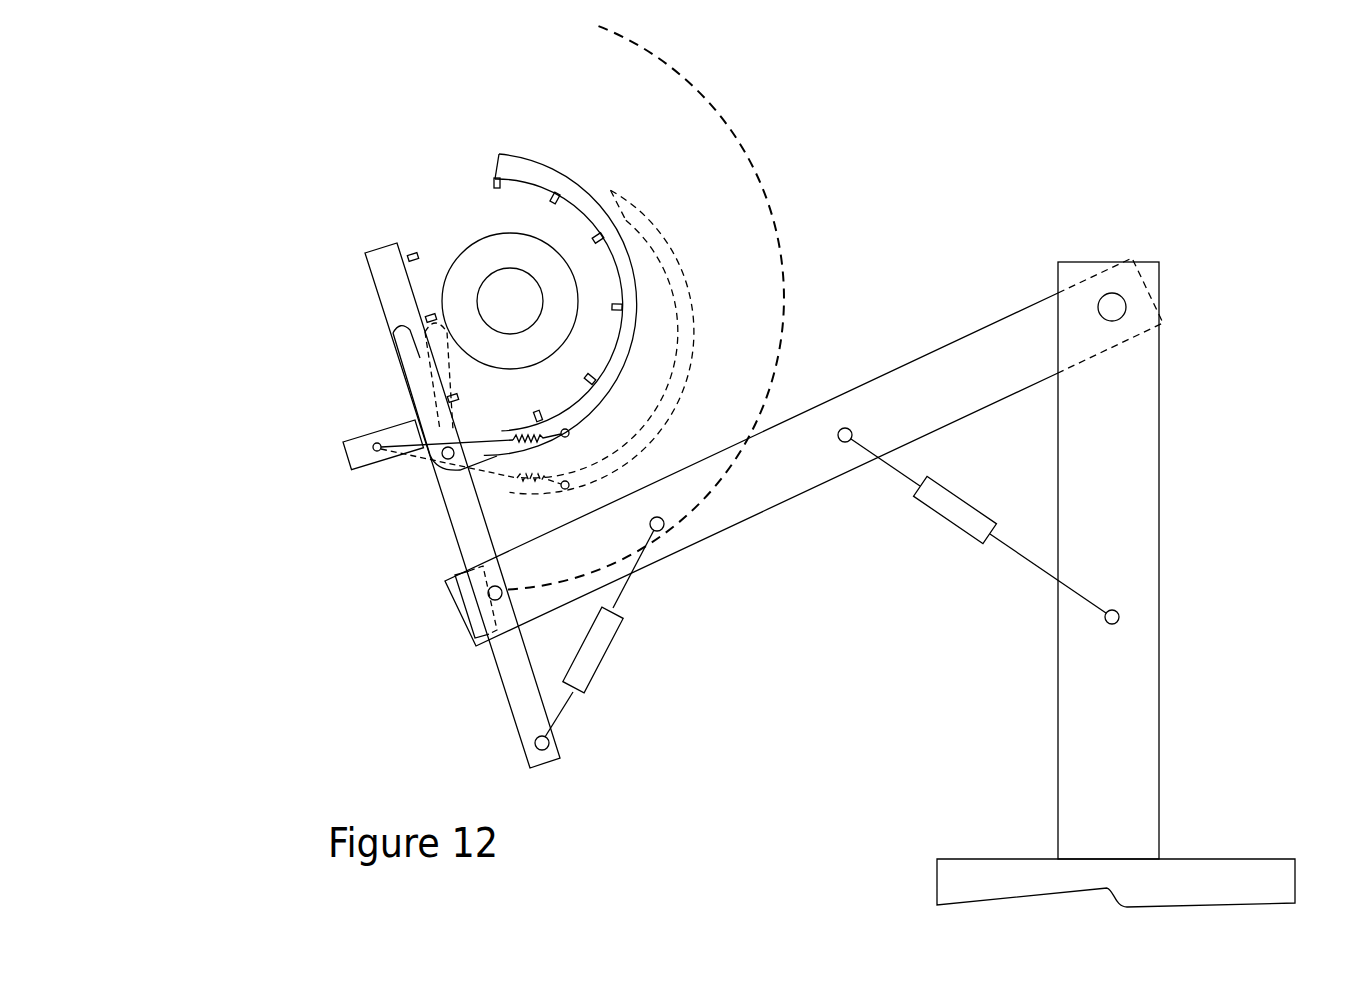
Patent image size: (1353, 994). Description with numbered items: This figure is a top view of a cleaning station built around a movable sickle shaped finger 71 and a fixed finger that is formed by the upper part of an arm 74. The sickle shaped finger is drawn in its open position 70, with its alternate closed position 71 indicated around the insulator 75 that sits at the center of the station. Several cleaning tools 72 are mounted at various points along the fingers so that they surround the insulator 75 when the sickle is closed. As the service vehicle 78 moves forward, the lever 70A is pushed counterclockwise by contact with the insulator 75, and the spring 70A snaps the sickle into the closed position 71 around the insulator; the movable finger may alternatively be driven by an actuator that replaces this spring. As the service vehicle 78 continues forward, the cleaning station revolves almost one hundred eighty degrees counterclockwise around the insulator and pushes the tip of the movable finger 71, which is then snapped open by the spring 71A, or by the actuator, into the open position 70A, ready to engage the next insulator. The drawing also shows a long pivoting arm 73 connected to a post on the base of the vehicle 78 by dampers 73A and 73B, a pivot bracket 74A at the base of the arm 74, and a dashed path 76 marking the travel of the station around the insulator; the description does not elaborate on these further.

The open position of sickle shaped finger 70 is at (706, 308).
The lever and spring 70A is at (424, 339).
The movable sickle shaped finger 71 is at (570, 162).
The spring 71A is at (390, 373).
The cleaning tools 72 is at (411, 243).
The pivot arm 73 is at (911, 350).
The damper 73A is at (943, 528).
The damper 73B is at (610, 654).
The arm 74 is at (459, 535).
The pivot bracket 74A is at (479, 604).
The insulator 75 is at (476, 238).
The travel path 76 is at (782, 203).
The service vehicle 78 is at (997, 855).